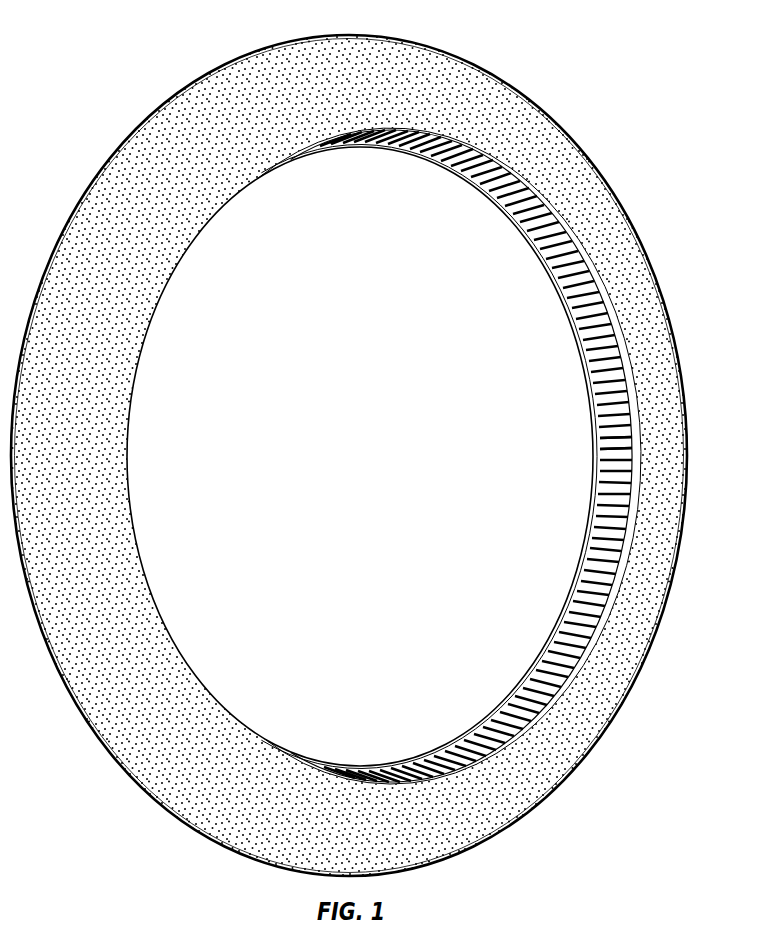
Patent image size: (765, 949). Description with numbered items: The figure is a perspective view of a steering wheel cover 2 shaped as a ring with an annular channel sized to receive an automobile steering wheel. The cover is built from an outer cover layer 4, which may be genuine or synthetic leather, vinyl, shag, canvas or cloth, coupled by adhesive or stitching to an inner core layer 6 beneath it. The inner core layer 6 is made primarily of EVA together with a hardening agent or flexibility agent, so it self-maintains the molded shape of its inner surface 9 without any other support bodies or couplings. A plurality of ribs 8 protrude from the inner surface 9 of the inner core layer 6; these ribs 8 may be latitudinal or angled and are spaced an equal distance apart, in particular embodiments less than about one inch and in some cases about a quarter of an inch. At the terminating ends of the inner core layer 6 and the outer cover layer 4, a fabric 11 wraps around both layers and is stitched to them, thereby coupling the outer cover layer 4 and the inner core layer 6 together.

The steering wheel cover 2 is at (646, 144).
The outer cover layer 4 is at (375, 70).
The inner core layer 6 is at (598, 328).
The ribs 8 is at (621, 445).
The inner surface 9 is at (614, 437).
The fabric 11 is at (583, 587).